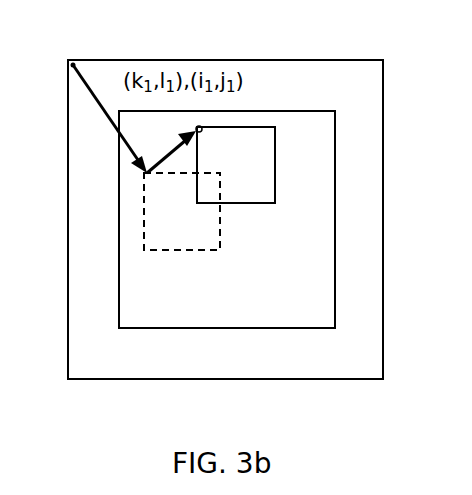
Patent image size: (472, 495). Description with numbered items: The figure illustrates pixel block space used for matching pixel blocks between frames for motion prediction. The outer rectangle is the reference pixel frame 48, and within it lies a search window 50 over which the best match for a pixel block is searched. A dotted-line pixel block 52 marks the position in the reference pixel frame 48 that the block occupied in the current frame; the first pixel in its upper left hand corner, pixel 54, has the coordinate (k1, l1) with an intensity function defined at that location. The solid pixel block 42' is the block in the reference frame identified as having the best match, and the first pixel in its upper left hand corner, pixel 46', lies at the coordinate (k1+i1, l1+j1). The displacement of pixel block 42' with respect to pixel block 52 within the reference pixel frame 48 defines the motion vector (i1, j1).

The reference pixel frame 48 is at (252, 60).
The search window 50 is at (300, 328).
The pixel block 42' is at (310, 212).
The pixel block 52 is at (193, 250).
The pixel 46' is at (309, 83).
The pixel 54 is at (147, 173).